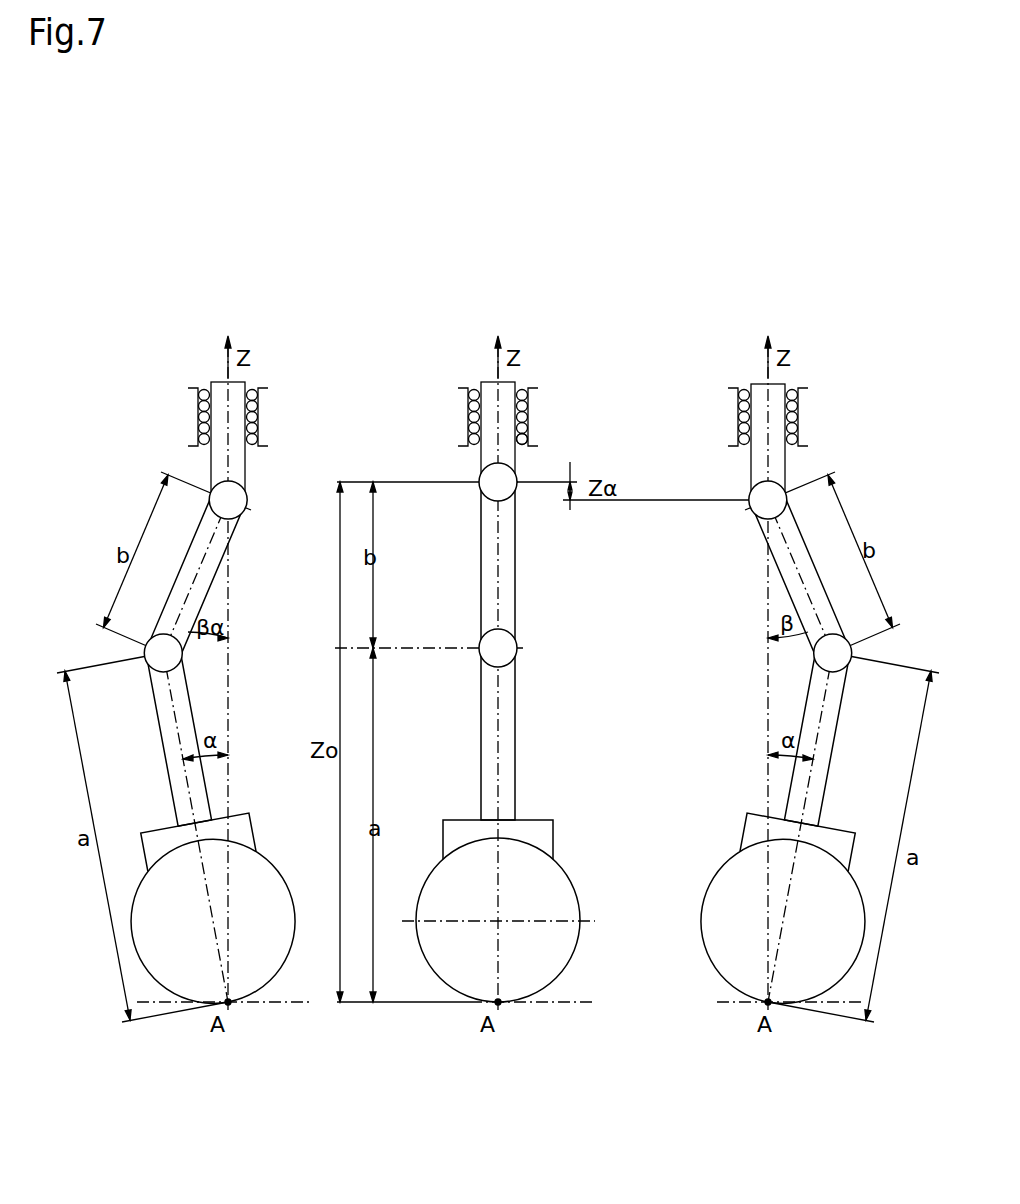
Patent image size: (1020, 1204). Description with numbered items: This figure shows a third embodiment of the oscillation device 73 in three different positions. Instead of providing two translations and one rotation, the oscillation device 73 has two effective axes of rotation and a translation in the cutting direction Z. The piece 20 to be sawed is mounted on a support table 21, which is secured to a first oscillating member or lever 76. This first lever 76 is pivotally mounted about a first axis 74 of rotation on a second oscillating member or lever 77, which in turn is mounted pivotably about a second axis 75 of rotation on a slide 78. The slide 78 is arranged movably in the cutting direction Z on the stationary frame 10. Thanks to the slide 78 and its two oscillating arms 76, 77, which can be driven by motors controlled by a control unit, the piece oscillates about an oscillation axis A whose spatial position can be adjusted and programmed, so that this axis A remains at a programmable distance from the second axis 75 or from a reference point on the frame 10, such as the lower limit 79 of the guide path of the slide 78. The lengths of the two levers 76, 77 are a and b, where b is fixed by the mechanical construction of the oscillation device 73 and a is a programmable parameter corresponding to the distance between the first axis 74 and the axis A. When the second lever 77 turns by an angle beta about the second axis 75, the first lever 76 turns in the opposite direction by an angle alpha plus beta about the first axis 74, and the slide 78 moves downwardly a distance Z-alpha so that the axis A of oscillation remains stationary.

The stationary frame 10 is at (257, 388).
The slide 78 is at (233, 417).
The lower limit of the guide path of the slide 79 is at (518, 446).
The second axis of rotation 75 is at (232, 503).
The second oscillating member or lever 77 is at (187, 593).
The first axis of rotation 74 is at (187, 650).
The first oscillating member or lever 76 is at (187, 732).
The support table 21 is at (232, 837).
The piece to be sawed 20 is at (252, 917).
The oscillation device 73 is at (187, 517).